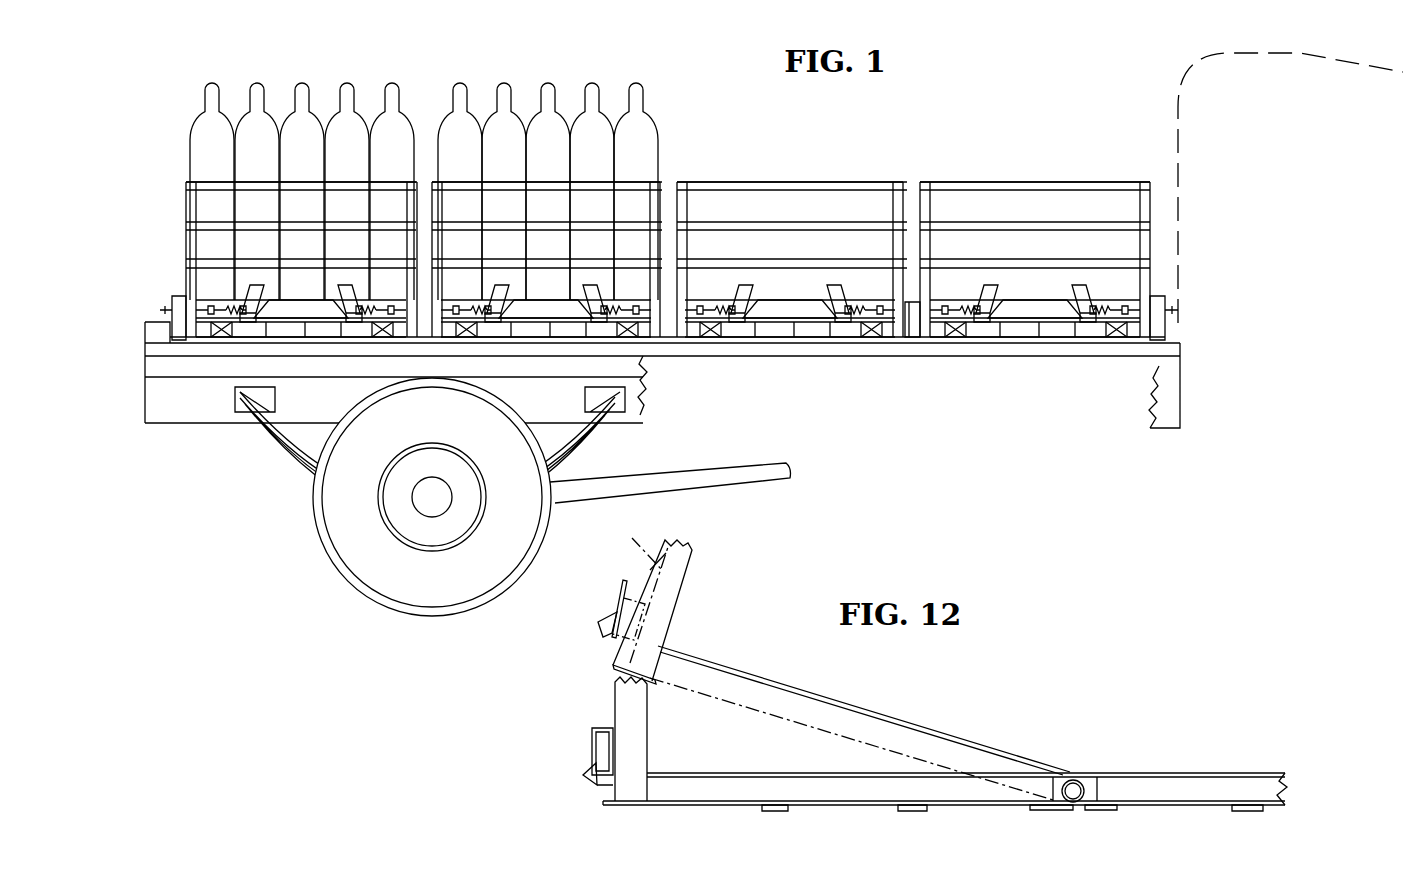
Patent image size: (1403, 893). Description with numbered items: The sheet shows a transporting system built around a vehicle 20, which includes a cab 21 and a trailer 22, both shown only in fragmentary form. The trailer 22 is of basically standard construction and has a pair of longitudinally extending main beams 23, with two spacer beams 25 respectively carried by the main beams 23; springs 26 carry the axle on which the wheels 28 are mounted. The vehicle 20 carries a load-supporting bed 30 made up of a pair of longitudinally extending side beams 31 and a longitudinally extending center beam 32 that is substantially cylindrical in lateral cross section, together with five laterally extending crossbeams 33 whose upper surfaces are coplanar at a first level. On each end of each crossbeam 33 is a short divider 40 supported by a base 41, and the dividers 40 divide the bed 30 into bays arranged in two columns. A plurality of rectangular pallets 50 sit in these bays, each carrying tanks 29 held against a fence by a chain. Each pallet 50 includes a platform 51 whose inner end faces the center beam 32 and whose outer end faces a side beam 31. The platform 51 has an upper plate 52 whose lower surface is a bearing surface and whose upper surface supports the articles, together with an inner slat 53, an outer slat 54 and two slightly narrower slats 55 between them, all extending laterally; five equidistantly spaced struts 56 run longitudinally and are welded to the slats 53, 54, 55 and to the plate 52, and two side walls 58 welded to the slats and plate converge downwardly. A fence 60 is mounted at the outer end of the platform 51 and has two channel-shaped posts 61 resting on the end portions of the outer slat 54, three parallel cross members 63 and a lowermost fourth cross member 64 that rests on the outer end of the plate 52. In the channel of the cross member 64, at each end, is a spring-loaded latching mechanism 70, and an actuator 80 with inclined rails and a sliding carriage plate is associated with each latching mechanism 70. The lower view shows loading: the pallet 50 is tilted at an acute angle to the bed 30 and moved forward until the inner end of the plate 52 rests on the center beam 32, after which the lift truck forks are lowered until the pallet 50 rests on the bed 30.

In FIG. 1, the vehicle 20 is at (1149, 470).
In FIG. 1, the cab 21 is at (1285, 245).
In FIG. 1, the trailer 22 is at (249, 446).
In FIG. 1, the main beams 23 is at (215, 416).
In FIG. 1, the spacer beams 25 is at (172, 368).
In FIG. 1, the springs 26 is at (312, 456).
In FIG. 1, the wheels 28 is at (345, 545).
In FIG. 1, the tanks 29 is at (210, 152).
In FIG. 1, the load-supporting bed 30 is at (159, 376).
In FIG. 1, the side beams 31 is at (188, 358).
In FIG. 12, the center beam 32 is at (1078, 805).
In FIG. 1, the crossbeams 33 is at (145, 329).
In FIG. 1, the divider 40 is at (172, 306).
In FIG. 1, the base 41 is at (912, 330).
In FIG. 1, the pallets 50 is at (172, 221).
In FIG. 1, the platform 51 is at (1049, 360).
In FIG. 12, the platform 51 is at (707, 753).
In FIG. 12, the upper plate 52 is at (724, 773).
In FIG. 12, the inner slat 53 is at (1045, 810).
In FIG. 1, the outer slat 54 is at (772, 342).
In FIG. 12, the outer slat 54 is at (645, 805).
In FIG. 12, the slats 55 is at (785, 810).
In FIG. 1, the struts 56 is at (805, 330).
In FIG. 1, the side walls 58 is at (962, 340).
In FIG. 12, the side walls 58 is at (718, 790).
In FIG. 1, the fence 60 is at (650, 188).
In FIG. 1, the posts 61 is at (927, 210).
In FIG. 12, the posts 61 is at (635, 542).
In FIG. 1, the cross members 63 is at (198, 260).
In FIG. 1, the cross member 64 is at (548, 314).
In FIG. 12, the cross member 64 is at (610, 637).
In FIG. 1, the latching mechanism 70 is at (1143, 290).
In FIG. 1, the actuator 80 is at (740, 322).
In FIG. 12, the actuator 80 is at (622, 590).